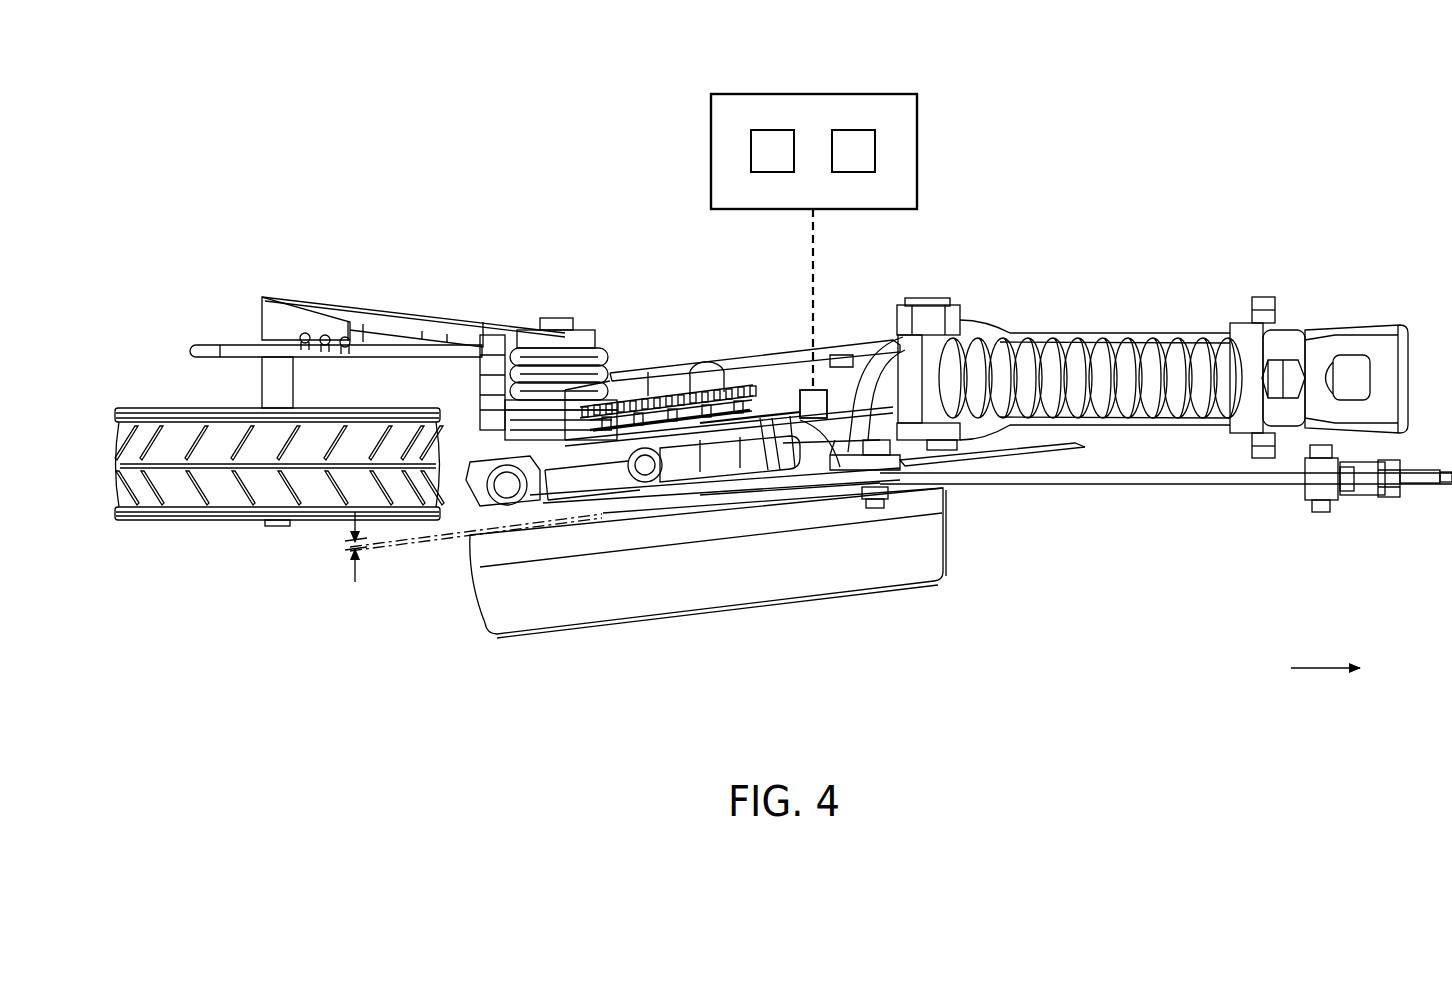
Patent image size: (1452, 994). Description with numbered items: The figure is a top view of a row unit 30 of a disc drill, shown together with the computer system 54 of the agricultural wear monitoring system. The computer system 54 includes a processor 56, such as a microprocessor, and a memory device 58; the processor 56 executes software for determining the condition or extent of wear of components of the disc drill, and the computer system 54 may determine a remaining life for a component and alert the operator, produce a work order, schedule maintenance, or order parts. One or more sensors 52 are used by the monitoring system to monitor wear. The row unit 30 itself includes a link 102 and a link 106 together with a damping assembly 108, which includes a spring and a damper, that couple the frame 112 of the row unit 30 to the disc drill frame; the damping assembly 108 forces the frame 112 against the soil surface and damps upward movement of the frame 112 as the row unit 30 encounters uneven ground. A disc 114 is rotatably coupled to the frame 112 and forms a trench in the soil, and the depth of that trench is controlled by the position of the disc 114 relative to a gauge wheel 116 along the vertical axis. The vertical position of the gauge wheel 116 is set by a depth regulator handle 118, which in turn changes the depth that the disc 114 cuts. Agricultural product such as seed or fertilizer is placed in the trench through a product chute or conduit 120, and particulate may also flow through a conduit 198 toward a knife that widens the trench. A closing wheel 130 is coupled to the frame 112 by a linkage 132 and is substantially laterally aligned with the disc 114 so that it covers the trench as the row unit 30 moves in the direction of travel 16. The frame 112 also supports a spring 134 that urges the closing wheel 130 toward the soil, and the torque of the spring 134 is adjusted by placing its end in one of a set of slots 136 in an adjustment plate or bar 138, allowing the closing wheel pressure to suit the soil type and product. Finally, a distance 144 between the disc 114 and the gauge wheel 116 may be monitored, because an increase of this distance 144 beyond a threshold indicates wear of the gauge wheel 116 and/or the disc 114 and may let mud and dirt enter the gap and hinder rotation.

The direction of travel 16 is at (1322, 668).
The row unit 30 is at (993, 210).
The sensor 52 is at (873, 372).
The computer system 54 is at (864, 94).
The processor 56 is at (771, 130).
The memory device 58 is at (855, 173).
The link 102 is at (1130, 488).
The link 106 is at (1367, 333).
The damping assembly 108 is at (1117, 312).
The frame 112 is at (770, 325).
The disc 114 is at (1022, 457).
The gauge wheel 116 is at (592, 600).
The depth regulator handle 118 is at (709, 375).
The product chute or conduit 120 is at (650, 482).
The closing wheel 130 is at (217, 505).
The linkage 132 is at (424, 328).
The spring 134 is at (210, 352).
The slots 136 is at (363, 368).
The adjustment plate or bar 138 is at (292, 314).
The distance 144 is at (352, 583).
The conduit 198 is at (513, 503).